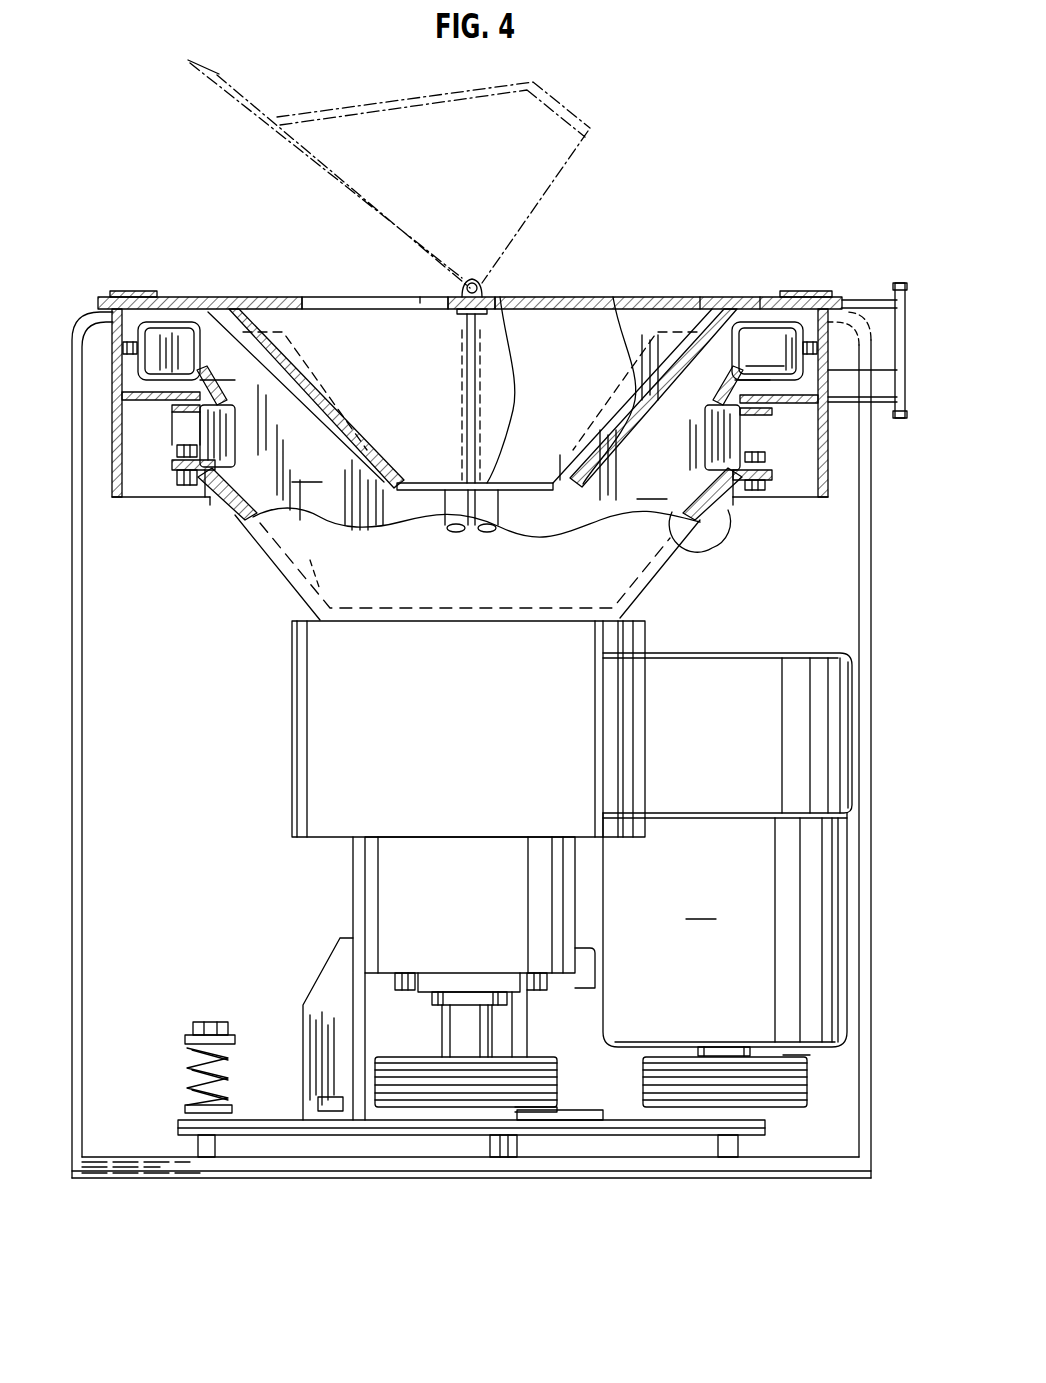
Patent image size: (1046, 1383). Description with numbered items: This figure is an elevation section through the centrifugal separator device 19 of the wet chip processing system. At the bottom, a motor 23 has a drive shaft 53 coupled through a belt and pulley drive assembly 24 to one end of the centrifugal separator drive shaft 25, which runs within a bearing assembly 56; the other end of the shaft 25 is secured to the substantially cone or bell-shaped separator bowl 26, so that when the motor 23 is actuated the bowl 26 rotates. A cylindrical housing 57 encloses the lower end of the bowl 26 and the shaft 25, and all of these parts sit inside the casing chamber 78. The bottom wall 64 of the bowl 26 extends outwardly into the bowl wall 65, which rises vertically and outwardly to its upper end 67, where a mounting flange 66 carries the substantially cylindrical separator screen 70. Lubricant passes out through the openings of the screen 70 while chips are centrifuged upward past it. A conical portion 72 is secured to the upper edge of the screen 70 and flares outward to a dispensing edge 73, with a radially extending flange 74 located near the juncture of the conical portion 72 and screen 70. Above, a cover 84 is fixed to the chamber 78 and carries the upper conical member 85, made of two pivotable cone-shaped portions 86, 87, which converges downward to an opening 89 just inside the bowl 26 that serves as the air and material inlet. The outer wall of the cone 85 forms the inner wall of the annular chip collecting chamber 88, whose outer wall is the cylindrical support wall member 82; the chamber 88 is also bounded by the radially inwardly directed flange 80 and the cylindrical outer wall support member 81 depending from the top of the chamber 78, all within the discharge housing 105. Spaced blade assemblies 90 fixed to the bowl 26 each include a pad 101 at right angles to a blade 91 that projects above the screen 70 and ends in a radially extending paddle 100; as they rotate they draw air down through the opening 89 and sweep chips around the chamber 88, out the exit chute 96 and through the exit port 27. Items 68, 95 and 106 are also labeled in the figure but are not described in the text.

The centrifugal separator device 19 is at (683, 246).
The motor 23 is at (727, 850).
The drive assembly 24 is at (548, 1036).
The centrifugal separator drive shaft 25 is at (463, 1048).
The separator bowl 26 is at (295, 595).
The exit port 27 is at (905, 283).
The drive shaft 53 is at (695, 1056).
The bearing assembly 56 is at (438, 980).
The cylindrical housing 57 is at (325, 822).
The bottom wall 64 is at (284, 617).
The bowl wall 65 is at (243, 505).
The mounting flange 66 is at (176, 455).
The upper end 67 is at (205, 497).
The nut 68 is at (188, 486).
The separator screen 70 is at (212, 447).
The conical portion 72 is at (207, 392).
The dispensing edge 73 is at (190, 405).
The radially extending flange 74 is at (178, 415).
The casing chamber 78 is at (82, 808).
The radially inwardly directed flange 80 is at (118, 412).
The cylindrical outer wall support member 81 is at (822, 497).
The cylindrical support wall member 82 is at (690, 540).
The cover 84 is at (120, 340).
The upper conical member 85 is at (205, 380).
The pivotable cone-shaped portion 86 is at (330, 186).
The pivotable cone-shaped portion 87 is at (295, 300).
The annular chip collecting chamber 88 is at (731, 318).
The opening 89 is at (505, 298).
The blade assembly 90 is at (472, 423).
The blade 91 is at (598, 308).
The hinge 95 is at (482, 288).
The exit chute 96 is at (876, 300).
The paddle 100 is at (170, 330).
The pad 101 is at (325, 513).
The discharge housing 105 is at (762, 318).
The plate layer 106 is at (170, 312).